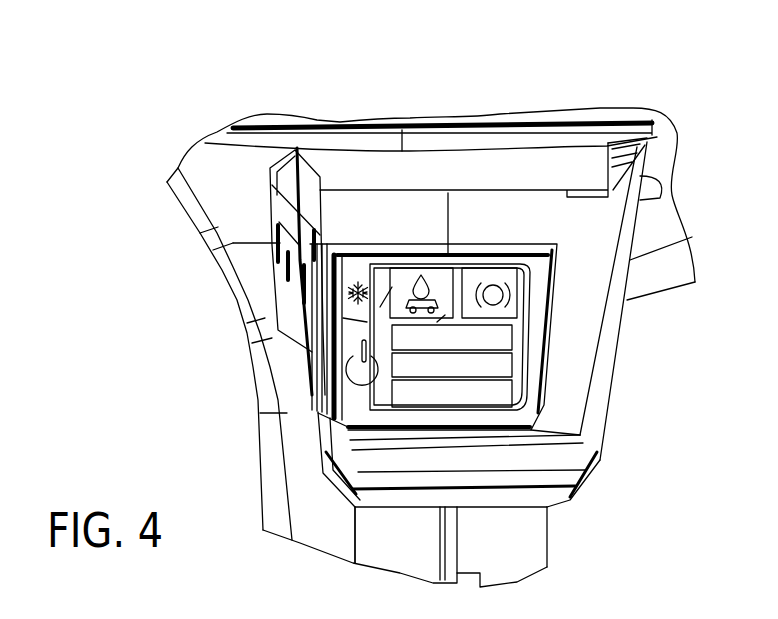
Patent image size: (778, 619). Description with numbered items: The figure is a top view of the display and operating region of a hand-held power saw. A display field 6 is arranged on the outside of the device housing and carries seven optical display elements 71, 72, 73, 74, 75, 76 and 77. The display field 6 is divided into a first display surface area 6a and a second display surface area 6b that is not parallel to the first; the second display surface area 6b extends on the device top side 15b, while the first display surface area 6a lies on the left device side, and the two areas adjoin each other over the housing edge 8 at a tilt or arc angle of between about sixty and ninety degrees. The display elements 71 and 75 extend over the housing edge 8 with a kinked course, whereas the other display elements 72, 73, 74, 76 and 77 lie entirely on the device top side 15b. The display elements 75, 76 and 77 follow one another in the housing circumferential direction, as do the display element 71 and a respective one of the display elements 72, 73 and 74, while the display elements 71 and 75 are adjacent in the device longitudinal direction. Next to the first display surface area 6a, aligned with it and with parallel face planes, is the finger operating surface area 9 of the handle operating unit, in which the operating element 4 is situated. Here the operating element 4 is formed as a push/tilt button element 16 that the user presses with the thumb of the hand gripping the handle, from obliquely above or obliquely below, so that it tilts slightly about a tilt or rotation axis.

The operating element 4 is at (290, 320).
The device top side 15b is at (555, 210).
The finger operating surface area 9 is at (287, 215).
The push/tilt button element 16 is at (285, 250).
The housing edge 8 is at (318, 410).
The display field 6 is at (437, 273).
The first display surface area 6a is at (345, 277).
The second display surface area 6b is at (408, 273).
The display element 75 is at (357, 278).
The display element 76 is at (420, 276).
The display element 77 is at (510, 297).
The display element 74 is at (500, 338).
The display element 71 is at (353, 400).
The display element 72 is at (395, 397).
The display element 73 is at (477, 393).